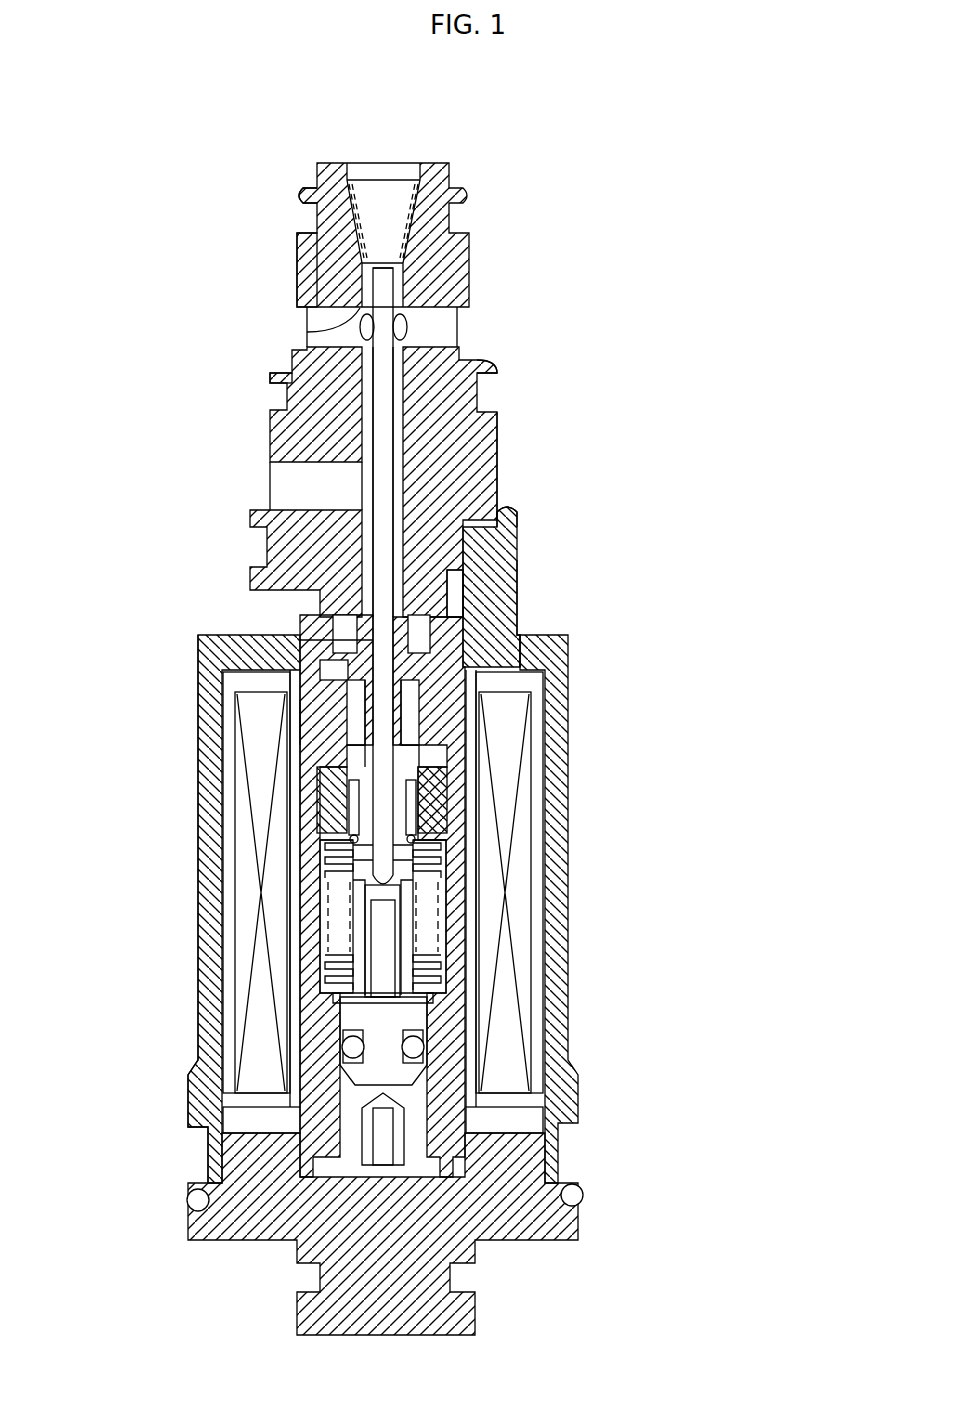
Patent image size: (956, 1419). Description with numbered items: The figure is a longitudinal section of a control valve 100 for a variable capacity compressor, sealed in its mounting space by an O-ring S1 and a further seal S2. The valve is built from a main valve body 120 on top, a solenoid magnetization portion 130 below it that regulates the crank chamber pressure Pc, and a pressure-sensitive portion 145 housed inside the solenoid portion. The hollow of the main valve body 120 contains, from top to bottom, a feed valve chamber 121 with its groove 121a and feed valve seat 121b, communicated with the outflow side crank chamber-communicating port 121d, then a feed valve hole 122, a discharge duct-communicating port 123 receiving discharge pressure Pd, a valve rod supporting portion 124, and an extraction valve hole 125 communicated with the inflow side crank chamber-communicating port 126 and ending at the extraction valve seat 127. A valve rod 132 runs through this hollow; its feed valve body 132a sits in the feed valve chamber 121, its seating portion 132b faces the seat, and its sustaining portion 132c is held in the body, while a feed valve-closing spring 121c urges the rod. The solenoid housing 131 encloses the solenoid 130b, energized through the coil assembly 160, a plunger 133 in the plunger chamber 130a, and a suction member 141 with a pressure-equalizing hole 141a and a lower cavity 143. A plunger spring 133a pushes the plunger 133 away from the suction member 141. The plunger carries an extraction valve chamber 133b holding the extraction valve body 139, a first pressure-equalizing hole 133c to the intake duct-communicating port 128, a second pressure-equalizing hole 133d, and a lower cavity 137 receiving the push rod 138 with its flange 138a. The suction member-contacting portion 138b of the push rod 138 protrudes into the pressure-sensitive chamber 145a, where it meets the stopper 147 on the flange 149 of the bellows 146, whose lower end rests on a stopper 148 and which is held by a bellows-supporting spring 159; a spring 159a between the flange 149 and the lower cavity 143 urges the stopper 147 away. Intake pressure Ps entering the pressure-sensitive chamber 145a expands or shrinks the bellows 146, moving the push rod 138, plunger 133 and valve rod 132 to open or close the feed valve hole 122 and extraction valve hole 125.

The control valve 100 is at (517, 442).
The main valve body 120 is at (470, 363).
The feed valve chamber 121 is at (452, 244).
The groove 121a is at (343, 182).
The feed valve seat 121b is at (352, 280).
The feed valve-closing spring 121c is at (420, 222).
The outflow side crank chamber-communicating port 121d is at (403, 170).
The feed valve hole 122 is at (312, 256).
The discharge duct-communicating port 123 is at (447, 325).
The valve rod supporting portion 124 is at (470, 385).
The extraction valve hole 125 is at (495, 474).
The inflow side crank chamber-communicating port 126 is at (290, 472).
The extraction valve seat 127 is at (510, 525).
The intake duct-communicating port 128 is at (276, 585).
The solenoid magnetization portion 130 is at (195, 893).
The plunger chamber 130a is at (296, 760).
The solenoid 130b is at (262, 1046).
The solenoid housing 131 is at (210, 1000).
The valve rod 132 is at (356, 410).
The feed valve body 132a is at (392, 283).
The seating portion 132b is at (378, 326).
The sustaining portion 132c is at (282, 378).
The plunger 133 is at (540, 648).
The plunger spring 133a is at (555, 690).
The extraction valve chamber 133b is at (456, 620).
The first pressure-equalizing hole 133c is at (338, 630).
The second pressure-equalizing hole 133d is at (312, 720).
The cavity 137 is at (318, 690).
The push rod 138 is at (420, 720).
The sleeve flange 138a is at (318, 650).
The suction member-contacting portion 138b is at (450, 780).
The extraction valve body 139 is at (487, 590).
The suction member 141 is at (437, 805).
The pressure-equalizing hole 141a is at (348, 790).
The lower cavity 143 is at (348, 846).
The pressure-sensitive portion 145 is at (440, 947).
The pressure-sensitive chamber 145a is at (415, 1010).
The bellows 146 is at (442, 930).
The stopper 147 is at (322, 930).
The stopper 148 is at (367, 978).
The flange 149 is at (335, 866).
The bellows-supporting spring 159 is at (445, 882).
The spring 159a is at (405, 822).
The coil assembly 160 is at (465, 1316).
The O-ring S1 is at (577, 1195).
The seal S2 is at (418, 1048).
The cooling medium pressure in crank chamber Pc is at (382, 190).
The discharge pressure Pd is at (318, 327).
The cooling medium pressure Ps is at (272, 596).